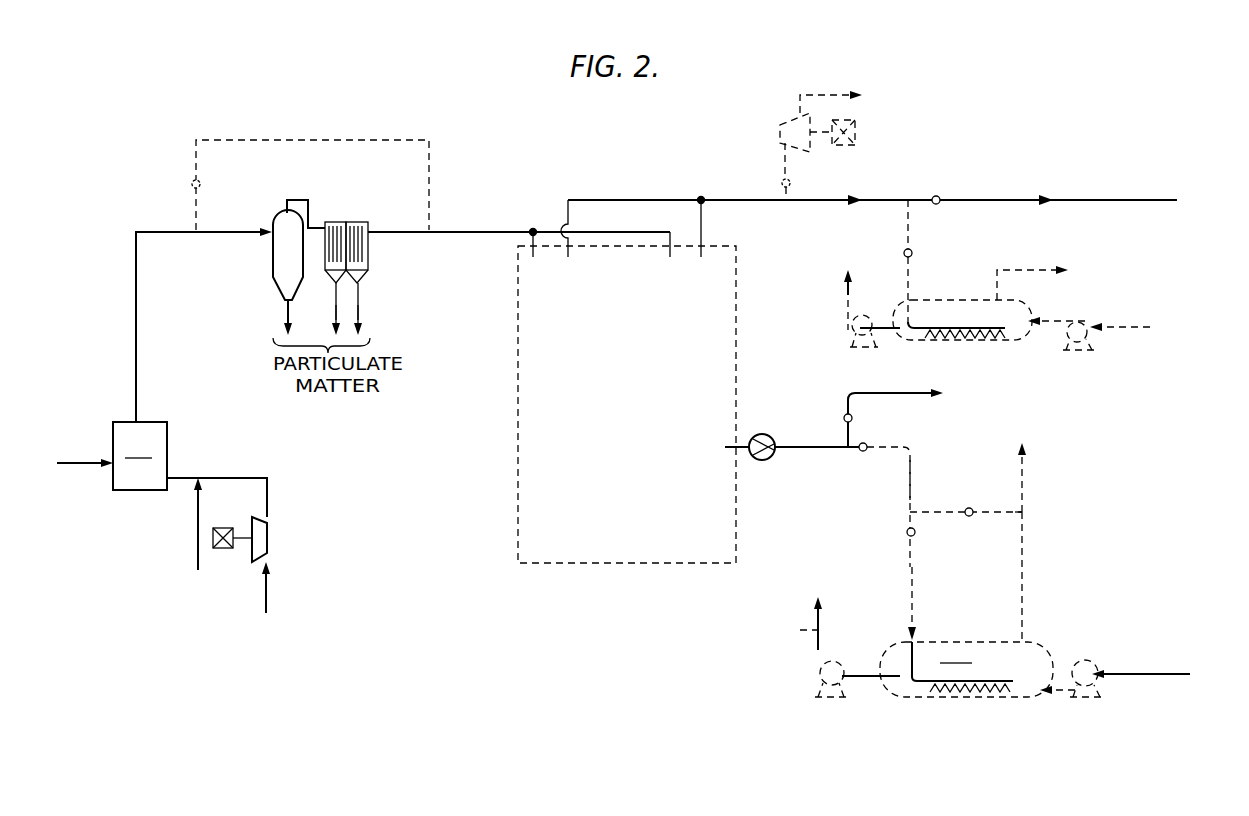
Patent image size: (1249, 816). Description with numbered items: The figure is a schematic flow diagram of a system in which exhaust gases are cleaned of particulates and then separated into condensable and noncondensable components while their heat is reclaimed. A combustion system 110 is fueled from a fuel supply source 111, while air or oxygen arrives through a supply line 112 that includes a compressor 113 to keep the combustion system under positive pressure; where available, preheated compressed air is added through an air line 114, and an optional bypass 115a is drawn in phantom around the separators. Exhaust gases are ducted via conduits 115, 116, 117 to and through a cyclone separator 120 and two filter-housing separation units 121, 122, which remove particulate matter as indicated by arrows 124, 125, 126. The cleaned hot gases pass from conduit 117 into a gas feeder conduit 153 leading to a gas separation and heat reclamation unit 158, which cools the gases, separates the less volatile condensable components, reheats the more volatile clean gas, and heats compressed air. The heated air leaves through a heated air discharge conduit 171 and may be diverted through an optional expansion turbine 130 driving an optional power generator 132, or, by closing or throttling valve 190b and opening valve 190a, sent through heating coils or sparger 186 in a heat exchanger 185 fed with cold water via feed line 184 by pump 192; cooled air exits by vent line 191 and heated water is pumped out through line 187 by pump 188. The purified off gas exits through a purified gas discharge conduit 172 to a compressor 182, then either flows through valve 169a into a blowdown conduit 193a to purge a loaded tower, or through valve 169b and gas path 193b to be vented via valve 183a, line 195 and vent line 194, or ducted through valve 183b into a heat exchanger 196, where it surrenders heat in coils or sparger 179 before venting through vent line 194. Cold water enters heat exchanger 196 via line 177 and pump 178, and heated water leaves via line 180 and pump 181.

The combustion system 110 is at (206, 448).
The fuel supply source 111 is at (83, 461).
The air or oxygen supply line 112 is at (268, 502).
The compressor 113 is at (272, 537).
The air line 114 is at (197, 515).
The conduit 115 is at (138, 366).
The exhaust gas bypass line 115a is at (274, 138).
The conduit 116 is at (309, 215).
The conduit 117 is at (420, 229).
The cyclone separator 120 is at (271, 278).
The separation unit 121 is at (328, 282).
The separation unit 122 is at (362, 278).
The arrow 124 is at (285, 306).
The arrow 125 is at (336, 313).
The arrow 126 is at (360, 311).
The expansion turbine 130 is at (790, 130).
The power generator 132 is at (858, 135).
The gas feeder conduit 153 is at (510, 229).
The gas separation and heat reclamation unit 158 is at (744, 408).
The valve 169a is at (844, 418).
The valve 169b is at (864, 452).
The heated air discharge conduit 171 is at (747, 198).
The purified gas discharge conduit 172 is at (787, 446).
The line 177 is at (1158, 673).
The pump 178 is at (1075, 660).
The coils or sparger 179 is at (979, 670).
The line 180 is at (816, 628).
The pump 181 is at (867, 676).
The compressor 182 is at (766, 460).
The valve 183a is at (969, 508).
The valve 183b is at (907, 532).
The feed line 184 is at (1110, 322).
The heat exchanger 185 is at (935, 300).
The heating coils or sparger 186 is at (1003, 326).
The line 187 is at (878, 325).
The pump 188 is at (850, 340).
The valve 190a is at (904, 253).
The valve 190b is at (936, 195).
The vent line 191 is at (1027, 266).
The pump 192 is at (1075, 322).
The blowdown conduit 193a is at (892, 395).
The gas path 193b is at (907, 487).
The vent line 194 is at (1026, 494).
The line 195 is at (1015, 520).
The heat exchanger 196 is at (966, 632).